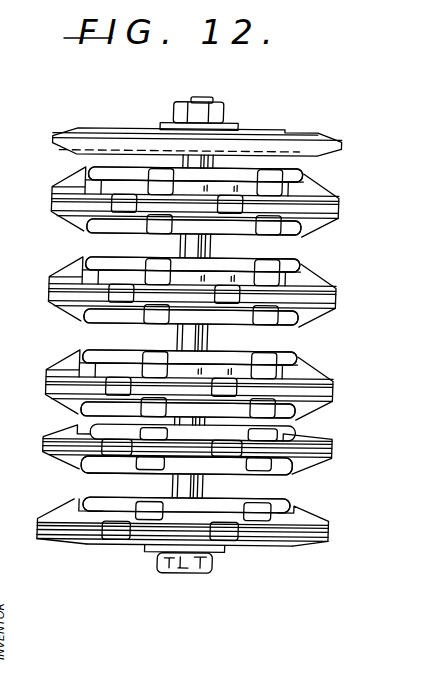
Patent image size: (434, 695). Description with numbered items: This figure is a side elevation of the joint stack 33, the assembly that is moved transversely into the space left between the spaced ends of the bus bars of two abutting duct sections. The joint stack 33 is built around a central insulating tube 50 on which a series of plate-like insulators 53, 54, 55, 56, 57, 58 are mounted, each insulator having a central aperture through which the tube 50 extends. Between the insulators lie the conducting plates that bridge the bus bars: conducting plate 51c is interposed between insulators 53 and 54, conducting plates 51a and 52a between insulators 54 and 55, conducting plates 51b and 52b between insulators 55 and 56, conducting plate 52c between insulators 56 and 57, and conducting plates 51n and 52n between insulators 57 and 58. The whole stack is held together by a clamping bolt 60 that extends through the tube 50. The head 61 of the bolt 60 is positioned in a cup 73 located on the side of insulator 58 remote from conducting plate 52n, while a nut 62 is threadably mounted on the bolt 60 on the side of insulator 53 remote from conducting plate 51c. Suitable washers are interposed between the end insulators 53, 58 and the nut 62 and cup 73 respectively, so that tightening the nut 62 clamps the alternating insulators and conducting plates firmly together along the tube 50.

The joint stack 33 is at (198, 339).
The insulating tube 50 is at (160, 326).
The conducting plate 51a is at (160, 230).
The conducting plate 51b is at (151, 313).
The conducting plate 51c is at (161, 168).
The conducting plate 51n is at (236, 460).
The conducting plate 52a is at (153, 257).
The conducting plate 52b is at (215, 344).
The conducting plate 52c is at (221, 408).
The conducting plate 52n is at (219, 495).
The plate-like insulator 53 is at (216, 134).
The plate-like insulator 54 is at (213, 202).
The plate-like insulator 55 is at (207, 291).
The plate-like insulator 56 is at (204, 385).
The plate-like insulator 57 is at (202, 447).
The plate-like insulator 58 is at (203, 525).
The clamping bolt 60 is at (214, 84).
The head 61 is at (193, 584).
The nut 62 is at (211, 111).
The cup 73 is at (168, 577).